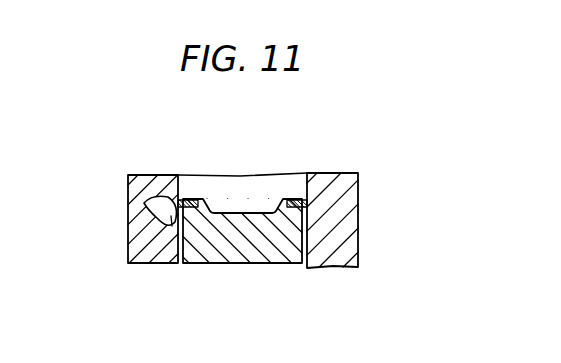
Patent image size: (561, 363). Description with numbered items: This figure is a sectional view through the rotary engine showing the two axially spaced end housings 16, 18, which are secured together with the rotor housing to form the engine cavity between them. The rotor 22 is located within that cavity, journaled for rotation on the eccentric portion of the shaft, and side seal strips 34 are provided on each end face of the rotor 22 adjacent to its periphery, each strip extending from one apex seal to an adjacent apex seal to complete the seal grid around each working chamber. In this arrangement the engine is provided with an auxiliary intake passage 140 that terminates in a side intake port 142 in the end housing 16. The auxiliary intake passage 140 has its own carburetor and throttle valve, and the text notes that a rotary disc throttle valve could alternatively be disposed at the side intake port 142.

The end housing 16 is at (134, 240).
The end housing 18 is at (353, 198).
The rotor 22 is at (289, 199).
The side seal strip 34 is at (287, 203).
The auxiliary intake passage 140 is at (151, 180).
The side intake port 142 is at (171, 224).